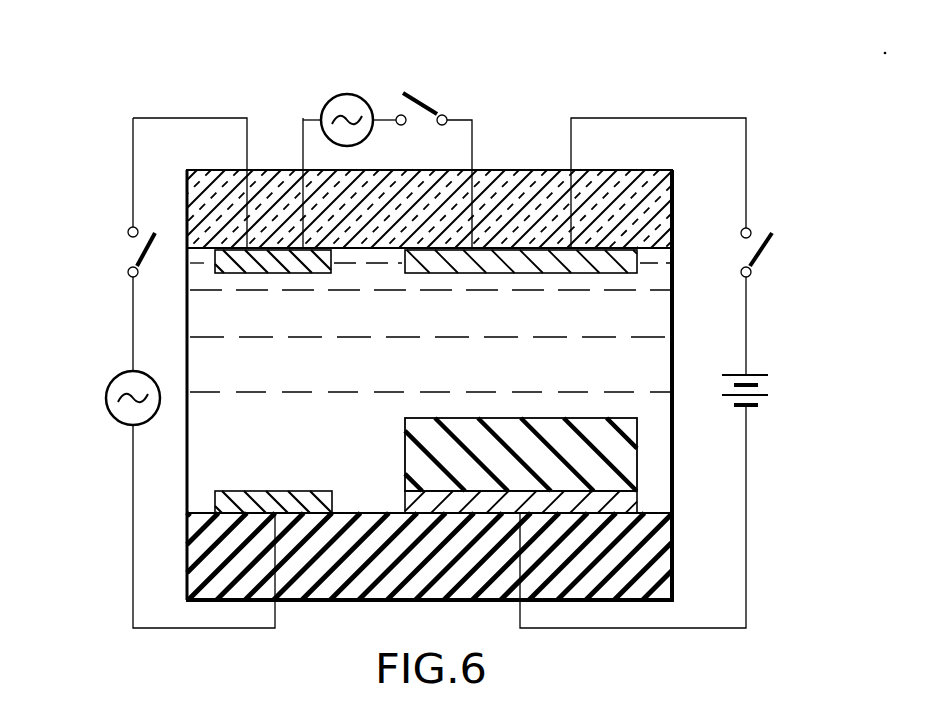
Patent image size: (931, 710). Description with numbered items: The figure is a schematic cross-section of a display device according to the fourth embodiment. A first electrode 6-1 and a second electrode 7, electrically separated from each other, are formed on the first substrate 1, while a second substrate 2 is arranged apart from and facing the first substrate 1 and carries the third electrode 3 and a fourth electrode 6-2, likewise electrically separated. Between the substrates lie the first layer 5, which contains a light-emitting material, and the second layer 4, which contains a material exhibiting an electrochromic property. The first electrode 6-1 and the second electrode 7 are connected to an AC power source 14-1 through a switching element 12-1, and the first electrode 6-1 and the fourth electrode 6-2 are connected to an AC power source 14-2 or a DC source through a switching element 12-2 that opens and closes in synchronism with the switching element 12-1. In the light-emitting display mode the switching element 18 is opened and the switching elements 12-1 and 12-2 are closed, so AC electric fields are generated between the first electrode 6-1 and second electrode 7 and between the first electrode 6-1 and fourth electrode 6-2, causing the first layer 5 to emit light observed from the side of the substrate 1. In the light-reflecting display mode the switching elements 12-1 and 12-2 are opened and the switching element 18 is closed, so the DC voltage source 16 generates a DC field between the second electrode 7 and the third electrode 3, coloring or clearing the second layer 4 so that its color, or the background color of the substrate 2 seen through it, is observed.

The first substrate 1 is at (675, 212).
The second substrate 2 is at (663, 555).
The third electrode 3 is at (633, 500).
The second layer 4 is at (608, 450).
The first layer 5 is at (672, 352).
The first electrode 6-1 is at (277, 275).
The fourth electrode 6-2 is at (277, 490).
The second electrode 7 is at (550, 275).
The switching element 12-1 is at (428, 94).
The switching element 12-2 is at (128, 252).
The AC power source 14-1 is at (355, 132).
The AC power source 14-2 is at (110, 417).
The DC voltage source 16 is at (777, 383).
The switching element 18 is at (765, 252).